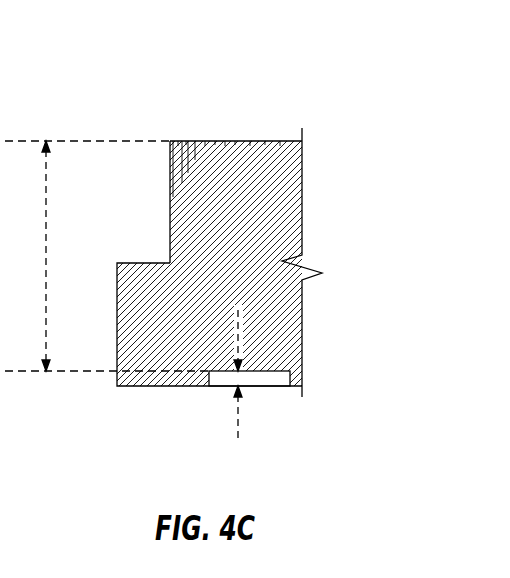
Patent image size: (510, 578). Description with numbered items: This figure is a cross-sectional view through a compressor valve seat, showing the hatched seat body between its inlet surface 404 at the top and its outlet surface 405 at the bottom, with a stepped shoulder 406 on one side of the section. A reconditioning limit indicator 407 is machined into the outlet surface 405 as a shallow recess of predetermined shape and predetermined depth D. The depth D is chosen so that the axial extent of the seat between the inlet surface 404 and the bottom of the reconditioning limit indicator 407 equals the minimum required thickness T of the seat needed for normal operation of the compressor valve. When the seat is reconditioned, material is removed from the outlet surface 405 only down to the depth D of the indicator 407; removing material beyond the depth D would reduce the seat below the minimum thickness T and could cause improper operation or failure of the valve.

The inlet surface 404 is at (220, 142).
The outlet surface 405 is at (172, 388).
The shoulder / step 406 is at (117, 278).
The reconditioning limit indicator 407 is at (262, 390).
The minimum required thickness T is at (46, 200).
The depth D is at (237, 425).